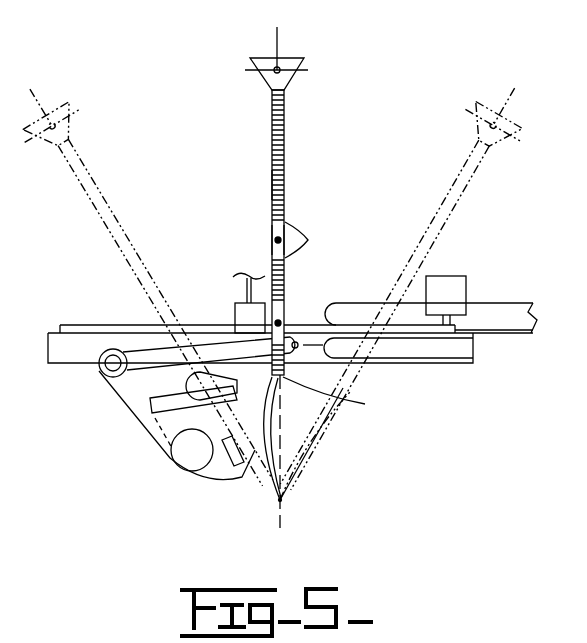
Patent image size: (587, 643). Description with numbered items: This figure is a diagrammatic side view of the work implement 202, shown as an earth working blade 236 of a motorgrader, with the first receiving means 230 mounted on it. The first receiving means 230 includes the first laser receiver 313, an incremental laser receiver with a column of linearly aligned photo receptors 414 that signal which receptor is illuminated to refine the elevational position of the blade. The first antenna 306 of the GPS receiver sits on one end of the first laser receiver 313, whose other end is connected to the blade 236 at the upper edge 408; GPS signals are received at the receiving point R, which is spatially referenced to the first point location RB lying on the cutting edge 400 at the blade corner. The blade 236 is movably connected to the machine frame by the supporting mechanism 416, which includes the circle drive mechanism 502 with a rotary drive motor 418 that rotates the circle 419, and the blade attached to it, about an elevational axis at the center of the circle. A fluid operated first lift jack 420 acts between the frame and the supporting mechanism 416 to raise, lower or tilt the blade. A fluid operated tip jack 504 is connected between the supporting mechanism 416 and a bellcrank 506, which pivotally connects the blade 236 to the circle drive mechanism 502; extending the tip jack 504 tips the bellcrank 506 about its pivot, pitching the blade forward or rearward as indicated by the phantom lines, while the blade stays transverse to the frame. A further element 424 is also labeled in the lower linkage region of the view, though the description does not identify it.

The first antenna 306 is at (262, 58).
The receiving point location R is at (281, 57).
The first laser receiver 313 is at (285, 135).
The first receiving means 230 is at (292, 185).
The photo receptors 414 is at (314, 240).
The first lift jack 420 is at (235, 313).
The tip jack 504 is at (230, 325).
The circle drive mechanism 502 is at (327, 307).
The rotary drive motor 418 is at (453, 280).
The supporting mechanism 416 is at (507, 315).
The circle 419 is at (449, 354).
The upper edge 408 is at (365, 404).
The bellcrank 506 is at (140, 412).
The work implement 202 is at (332, 443).
The roller 424 is at (190, 462).
The cutting edge 400 is at (282, 502).
The earth working blade 236 is at (272, 492).
The first point location RB is at (282, 506).